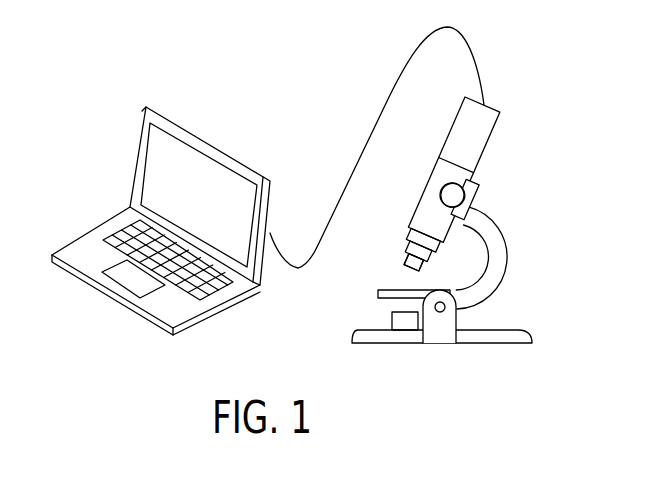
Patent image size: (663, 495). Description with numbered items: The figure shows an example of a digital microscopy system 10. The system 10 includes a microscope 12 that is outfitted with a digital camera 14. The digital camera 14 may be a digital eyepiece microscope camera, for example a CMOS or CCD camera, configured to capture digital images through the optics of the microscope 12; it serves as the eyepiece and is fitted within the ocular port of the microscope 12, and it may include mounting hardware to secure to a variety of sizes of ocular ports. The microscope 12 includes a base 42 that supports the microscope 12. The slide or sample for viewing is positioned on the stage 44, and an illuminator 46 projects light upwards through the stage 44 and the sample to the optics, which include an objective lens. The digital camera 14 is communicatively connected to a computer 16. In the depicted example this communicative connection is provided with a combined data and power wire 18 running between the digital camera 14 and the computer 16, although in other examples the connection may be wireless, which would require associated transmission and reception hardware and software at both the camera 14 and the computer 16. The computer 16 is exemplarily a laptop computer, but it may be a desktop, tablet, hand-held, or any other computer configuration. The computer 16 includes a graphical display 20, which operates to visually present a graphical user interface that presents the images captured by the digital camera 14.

The digital microscopy system 10 is at (147, 68).
The microscope 12 is at (503, 233).
The digital camera 14 is at (488, 142).
The computer 16 is at (210, 143).
The combined data and power wire 18 is at (408, 68).
The graphical display 20 is at (183, 213).
The base 42 is at (522, 337).
The stage 44 is at (378, 295).
The illuminator 46 is at (392, 313).